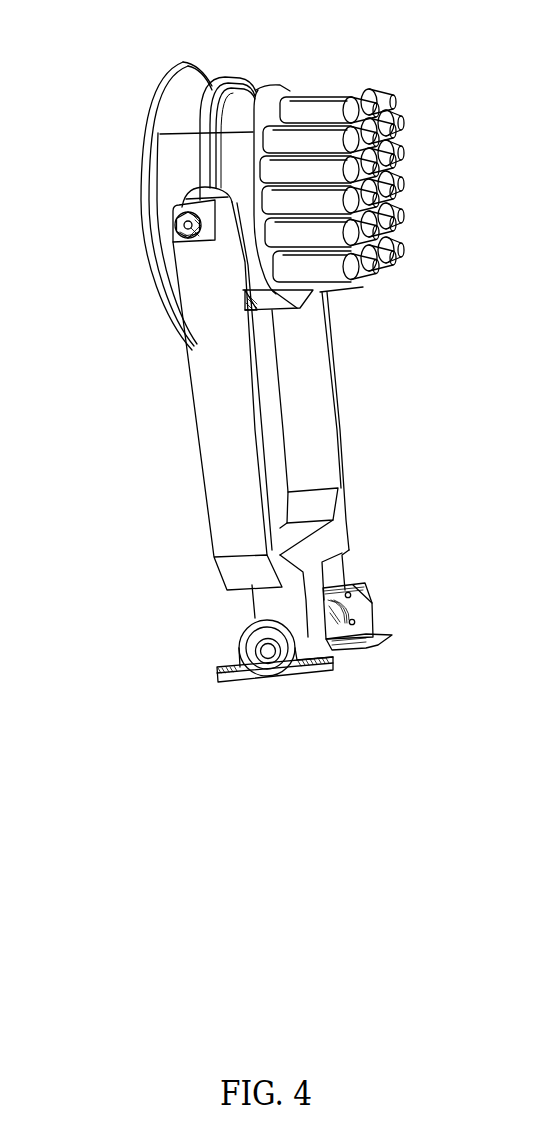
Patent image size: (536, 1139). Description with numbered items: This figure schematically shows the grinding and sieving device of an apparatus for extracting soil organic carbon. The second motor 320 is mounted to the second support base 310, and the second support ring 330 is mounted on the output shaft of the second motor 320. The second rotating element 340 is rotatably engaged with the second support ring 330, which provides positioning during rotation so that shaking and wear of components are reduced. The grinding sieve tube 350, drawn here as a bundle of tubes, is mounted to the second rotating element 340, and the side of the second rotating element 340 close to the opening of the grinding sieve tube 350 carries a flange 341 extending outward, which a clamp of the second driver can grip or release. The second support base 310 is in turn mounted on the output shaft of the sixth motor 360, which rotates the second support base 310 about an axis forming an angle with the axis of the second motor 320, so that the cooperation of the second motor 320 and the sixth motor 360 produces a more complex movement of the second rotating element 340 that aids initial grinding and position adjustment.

The second support base 310 is at (223, 412).
The second motor 320 is at (173, 242).
The second support ring 330 is at (207, 123).
The second rotating element 340 is at (258, 80).
The flange 341 is at (143, 166).
The grinding sieve tube 350 is at (330, 110).
The sixth motor 360 is at (267, 657).